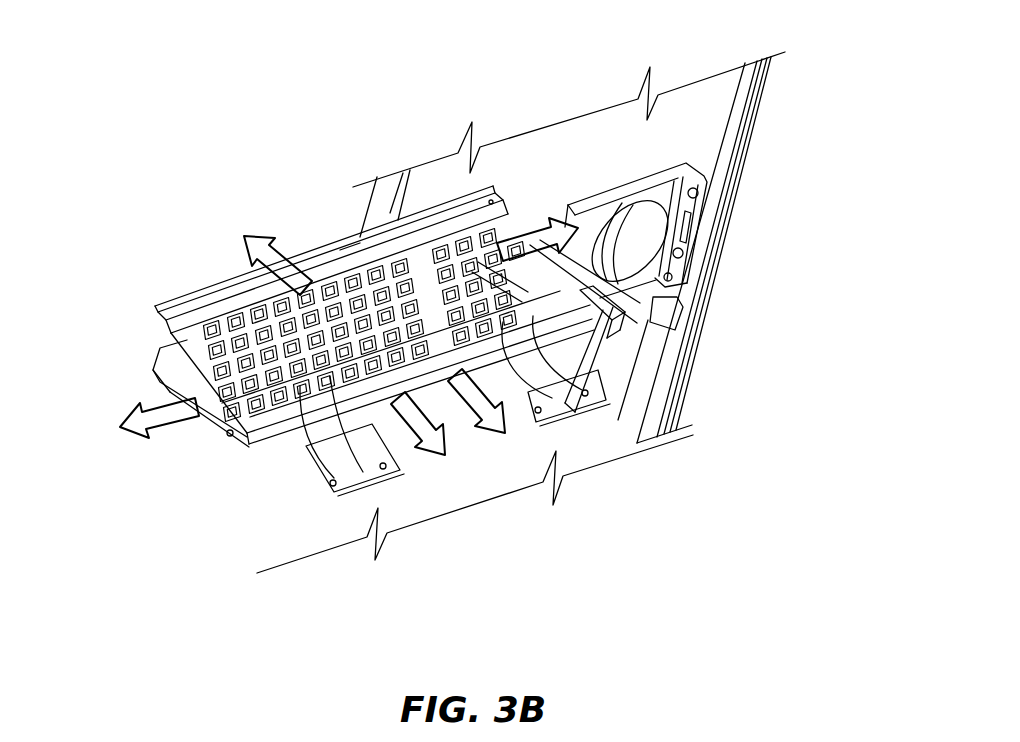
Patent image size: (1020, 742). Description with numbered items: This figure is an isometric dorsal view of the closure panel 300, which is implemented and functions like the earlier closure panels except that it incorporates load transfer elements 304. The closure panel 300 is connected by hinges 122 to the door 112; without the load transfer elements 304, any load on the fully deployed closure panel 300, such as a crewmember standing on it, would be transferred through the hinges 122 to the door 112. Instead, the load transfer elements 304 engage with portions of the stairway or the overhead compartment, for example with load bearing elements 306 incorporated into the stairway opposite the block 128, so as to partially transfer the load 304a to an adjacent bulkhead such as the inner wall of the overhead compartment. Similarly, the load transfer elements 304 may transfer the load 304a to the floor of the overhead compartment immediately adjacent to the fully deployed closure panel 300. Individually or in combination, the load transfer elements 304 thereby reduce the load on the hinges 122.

The closure panel 300 is at (131, 92).
The door 112 is at (440, 175).
The hinges 122 is at (355, 442).
The block 128 is at (608, 325).
The load transfer elements 304 is at (355, 250).
The partial load transfer 304a is at (168, 417).
The load bearing elements 306 is at (180, 387).